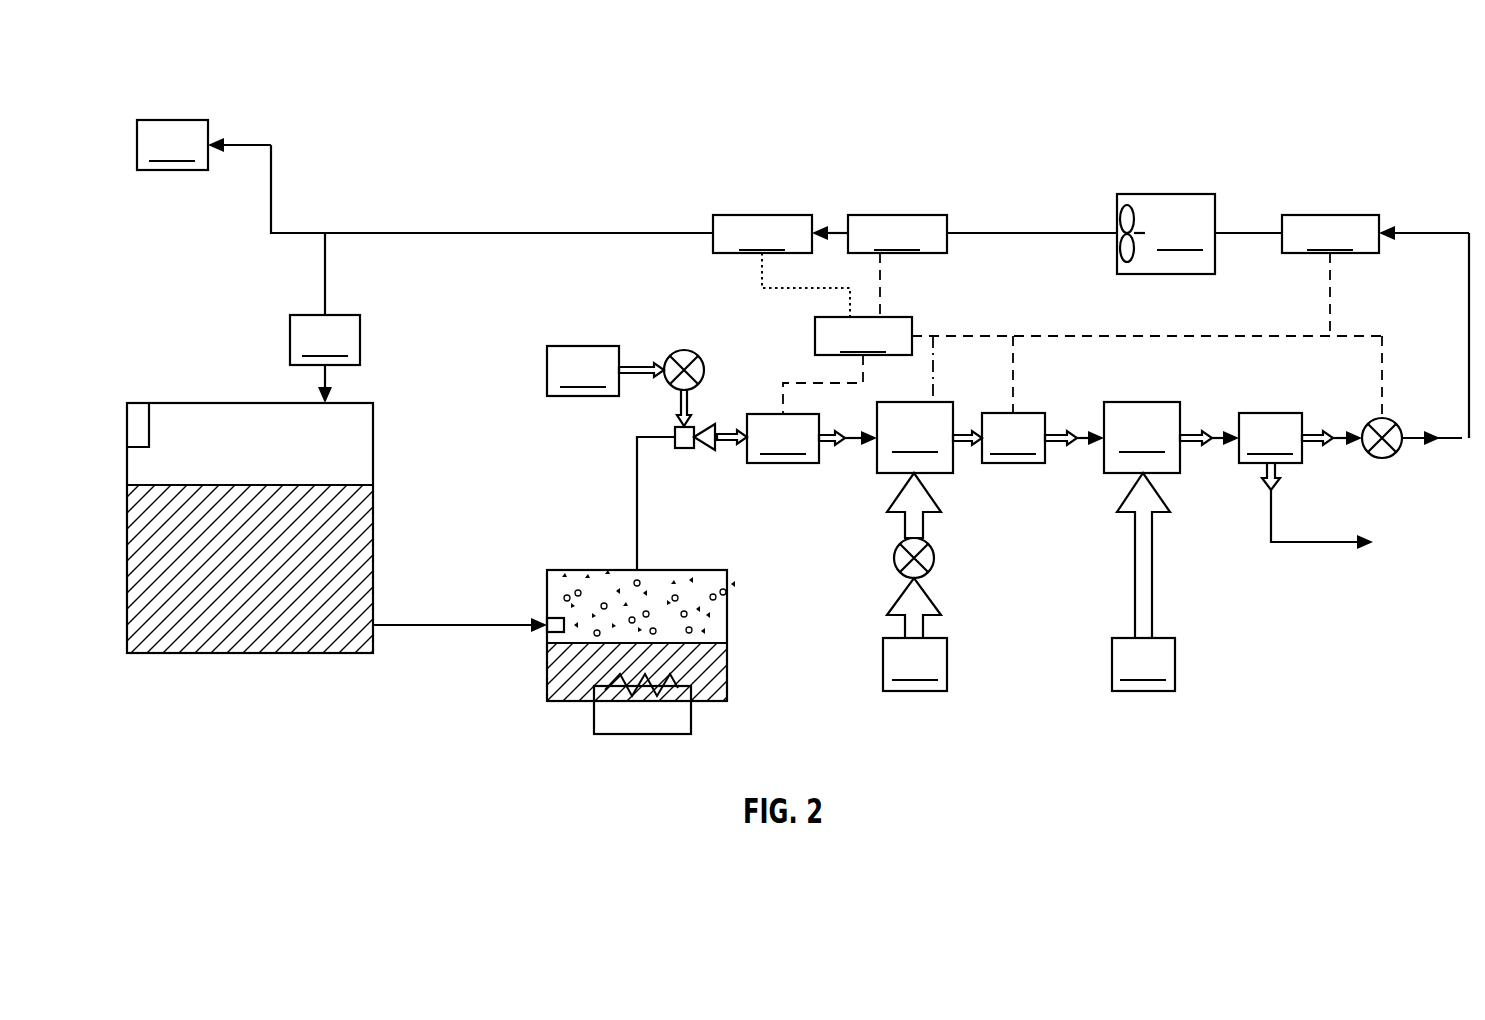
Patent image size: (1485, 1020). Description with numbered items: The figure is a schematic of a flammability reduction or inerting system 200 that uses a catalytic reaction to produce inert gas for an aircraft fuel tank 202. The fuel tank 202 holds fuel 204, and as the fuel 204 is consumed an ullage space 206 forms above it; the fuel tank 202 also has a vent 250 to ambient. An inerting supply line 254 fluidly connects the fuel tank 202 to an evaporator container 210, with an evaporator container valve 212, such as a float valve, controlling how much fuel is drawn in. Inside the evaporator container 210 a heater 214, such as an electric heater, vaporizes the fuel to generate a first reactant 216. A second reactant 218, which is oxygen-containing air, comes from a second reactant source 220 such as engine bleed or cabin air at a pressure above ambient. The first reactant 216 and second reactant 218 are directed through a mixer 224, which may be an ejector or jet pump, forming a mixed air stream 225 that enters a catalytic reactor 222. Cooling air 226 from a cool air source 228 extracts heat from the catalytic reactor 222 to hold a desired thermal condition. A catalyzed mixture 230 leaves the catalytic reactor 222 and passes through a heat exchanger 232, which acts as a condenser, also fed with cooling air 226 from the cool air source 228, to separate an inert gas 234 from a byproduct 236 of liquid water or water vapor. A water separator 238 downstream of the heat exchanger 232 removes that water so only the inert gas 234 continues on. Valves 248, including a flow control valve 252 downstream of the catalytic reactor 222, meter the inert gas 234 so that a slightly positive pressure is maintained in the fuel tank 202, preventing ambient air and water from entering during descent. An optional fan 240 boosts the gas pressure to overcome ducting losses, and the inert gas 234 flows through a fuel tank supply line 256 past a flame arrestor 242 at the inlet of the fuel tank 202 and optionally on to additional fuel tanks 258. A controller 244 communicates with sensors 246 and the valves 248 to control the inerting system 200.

The inerting system 200 is at (292, 88).
The fuel tank 202 is at (250, 402).
The fuel 204 is at (240, 628).
The ullage space 206 is at (350, 458).
The evaporator container 210 is at (598, 568).
The evaporator container valve 212 is at (540, 632).
The heater 214 is at (680, 715).
The first reactant 216 is at (709, 608).
The second reactant 218 is at (709, 678).
The second reactant source 220 is at (605, 371).
The catalytic reactor 222 is at (915, 437).
The mixer 224 is at (686, 450).
The mixed air stream 225 is at (830, 448).
The cooling air 226 is at (925, 528).
The cool air source 228 is at (1029, 664).
The catalyzed mixture 230 is at (962, 432).
The heat exchanger 232 is at (1171, 437).
The inert gas 234 is at (1318, 432).
The byproduct 236 is at (1262, 470).
The water separator 238 is at (1270, 438).
The fan 240 is at (1166, 234).
The flame arrestor 242 is at (325, 318).
The controller 244 is at (1072, 335).
The sensors 246 is at (1046, 338).
The valves 248 is at (686, 349).
The vent 250 is at (140, 412).
The flow control valve 252 is at (1382, 460).
The inerting supply line 254 is at (450, 628).
The fuel tank supply line 256 is at (490, 232).
The additional fuel tanks 258 is at (204, 145).